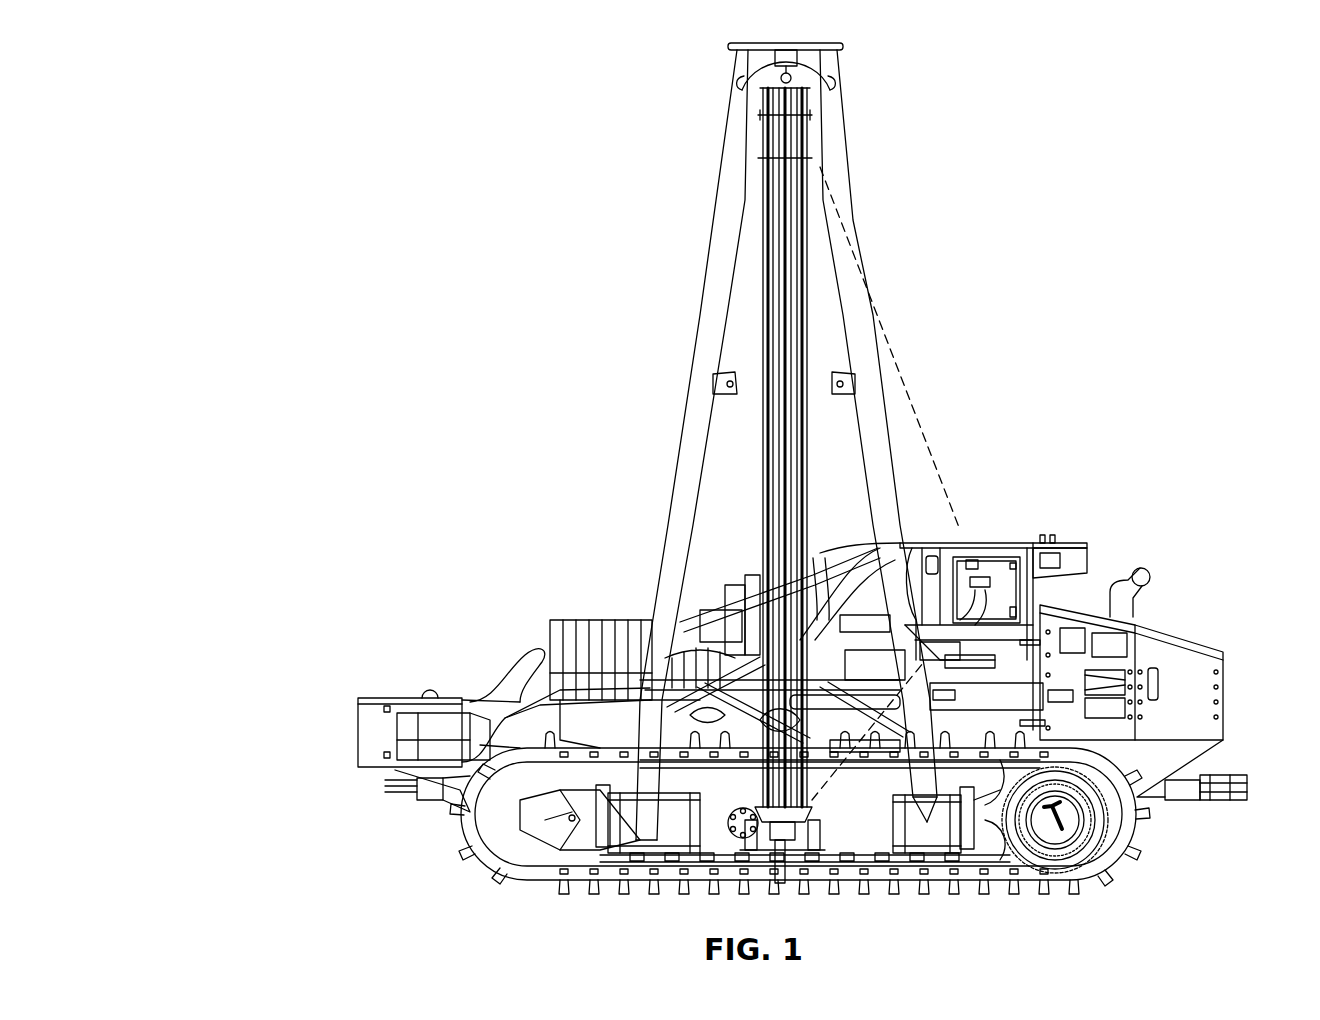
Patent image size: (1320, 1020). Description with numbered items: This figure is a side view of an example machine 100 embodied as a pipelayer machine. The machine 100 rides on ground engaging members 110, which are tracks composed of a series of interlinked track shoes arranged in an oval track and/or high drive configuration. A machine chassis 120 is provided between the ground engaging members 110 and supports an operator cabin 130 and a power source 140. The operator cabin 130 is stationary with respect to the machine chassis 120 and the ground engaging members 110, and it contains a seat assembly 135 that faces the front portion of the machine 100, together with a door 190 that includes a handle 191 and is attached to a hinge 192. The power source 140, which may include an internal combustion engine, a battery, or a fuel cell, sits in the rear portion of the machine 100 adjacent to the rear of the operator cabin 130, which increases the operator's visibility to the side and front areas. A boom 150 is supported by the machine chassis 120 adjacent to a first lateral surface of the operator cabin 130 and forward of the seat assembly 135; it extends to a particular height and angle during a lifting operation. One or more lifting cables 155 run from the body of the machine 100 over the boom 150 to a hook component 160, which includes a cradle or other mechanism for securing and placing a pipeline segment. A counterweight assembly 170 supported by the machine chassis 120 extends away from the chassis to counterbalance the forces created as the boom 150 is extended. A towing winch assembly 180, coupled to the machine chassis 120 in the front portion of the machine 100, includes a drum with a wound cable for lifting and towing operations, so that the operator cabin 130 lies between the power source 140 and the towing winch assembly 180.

The machine 100 is at (263, 64).
The ground engaging members 110 is at (487, 870).
The machine chassis 120 is at (473, 812).
The operator cabin 130 is at (1076, 476).
The seat assembly 135 is at (983, 577).
The power source 140 is at (1173, 637).
The boom 150 is at (850, 325).
The lifting cables 155 is at (807, 290).
The hook component 160 is at (783, 862).
The counterweight assembly 170 is at (565, 650).
The towing winch assembly 180 is at (367, 717).
The door 190 is at (930, 565).
The handle 191 is at (973, 563).
The hinge 192 is at (817, 557).